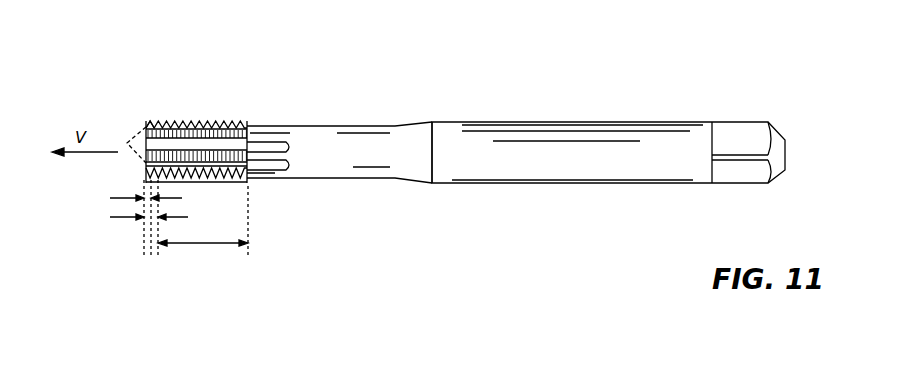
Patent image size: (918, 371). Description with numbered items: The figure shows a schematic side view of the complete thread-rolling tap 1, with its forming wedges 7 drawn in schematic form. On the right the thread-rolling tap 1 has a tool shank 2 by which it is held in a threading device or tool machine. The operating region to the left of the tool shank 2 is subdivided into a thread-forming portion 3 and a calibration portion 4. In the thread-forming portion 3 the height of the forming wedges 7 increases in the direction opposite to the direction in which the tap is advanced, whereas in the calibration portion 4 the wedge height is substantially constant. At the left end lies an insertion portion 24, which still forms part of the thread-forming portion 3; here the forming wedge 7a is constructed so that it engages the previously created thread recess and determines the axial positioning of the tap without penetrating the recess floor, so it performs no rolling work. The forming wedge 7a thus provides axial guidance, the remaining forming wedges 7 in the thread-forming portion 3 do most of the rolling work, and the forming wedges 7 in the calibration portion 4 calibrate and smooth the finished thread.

The thread-rolling tap 1 is at (422, 108).
The tool shank 2 is at (540, 150).
The thread-forming portion 3 is at (140, 219).
The calibration portion 4 is at (203, 253).
The forming wedges 7 is at (152, 124).
The forming wedge 7a is at (149, 124).
The insertion portion 24 is at (145, 190).